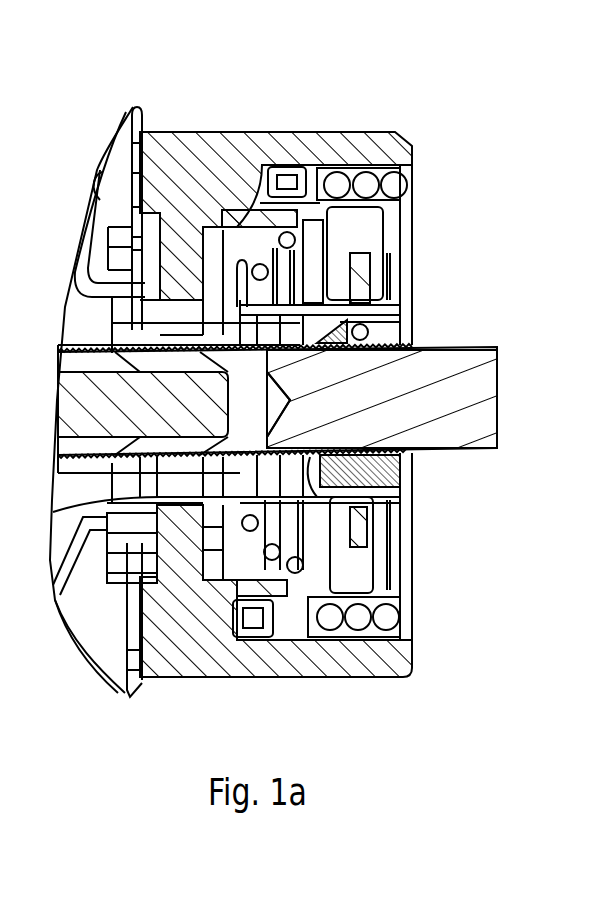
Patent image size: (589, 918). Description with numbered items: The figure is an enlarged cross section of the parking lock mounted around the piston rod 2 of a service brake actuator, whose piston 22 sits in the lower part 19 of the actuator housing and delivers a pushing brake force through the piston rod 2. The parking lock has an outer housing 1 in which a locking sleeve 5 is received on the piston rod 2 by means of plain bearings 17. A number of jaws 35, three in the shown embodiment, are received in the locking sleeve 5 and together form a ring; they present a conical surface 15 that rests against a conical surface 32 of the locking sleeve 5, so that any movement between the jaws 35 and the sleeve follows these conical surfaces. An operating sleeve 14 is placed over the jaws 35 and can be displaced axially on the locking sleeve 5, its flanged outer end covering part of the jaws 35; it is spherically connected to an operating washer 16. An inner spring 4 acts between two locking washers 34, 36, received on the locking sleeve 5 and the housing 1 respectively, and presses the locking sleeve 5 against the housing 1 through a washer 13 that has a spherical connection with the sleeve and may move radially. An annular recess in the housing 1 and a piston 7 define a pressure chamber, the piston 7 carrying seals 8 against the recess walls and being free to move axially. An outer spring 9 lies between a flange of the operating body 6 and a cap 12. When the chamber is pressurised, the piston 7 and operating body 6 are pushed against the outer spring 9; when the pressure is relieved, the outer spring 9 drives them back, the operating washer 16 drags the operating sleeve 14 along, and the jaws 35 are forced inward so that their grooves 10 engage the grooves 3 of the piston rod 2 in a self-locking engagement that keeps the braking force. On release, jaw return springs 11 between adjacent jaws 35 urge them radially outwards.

The outer housing 1 is at (238, 132).
The piston rod 2 is at (478, 348).
The grooves 3 is at (110, 455).
The inner spring 4 is at (293, 173).
The locking sleeve 5 is at (53, 497).
The operating body 6 is at (392, 235).
The piston 7 is at (340, 133).
The seals 8 is at (275, 165).
The outer spring 9 is at (408, 185).
The grooves 10 is at (413, 453).
The jaw return springs 11 is at (413, 325).
The cap 12 is at (413, 213).
The washer 13 is at (207, 227).
The operating sleeve 14 is at (413, 550).
The conical surface 15 is at (413, 334).
The operating washer 16 is at (372, 268).
The plain bearings 17 is at (170, 324).
The lower part 19 is at (137, 110).
The piston 22 is at (77, 415).
The conical surface 32 is at (413, 580).
The locking washer 34 is at (338, 648).
The jaws 35 is at (413, 483).
The locking washer 36 is at (125, 695).